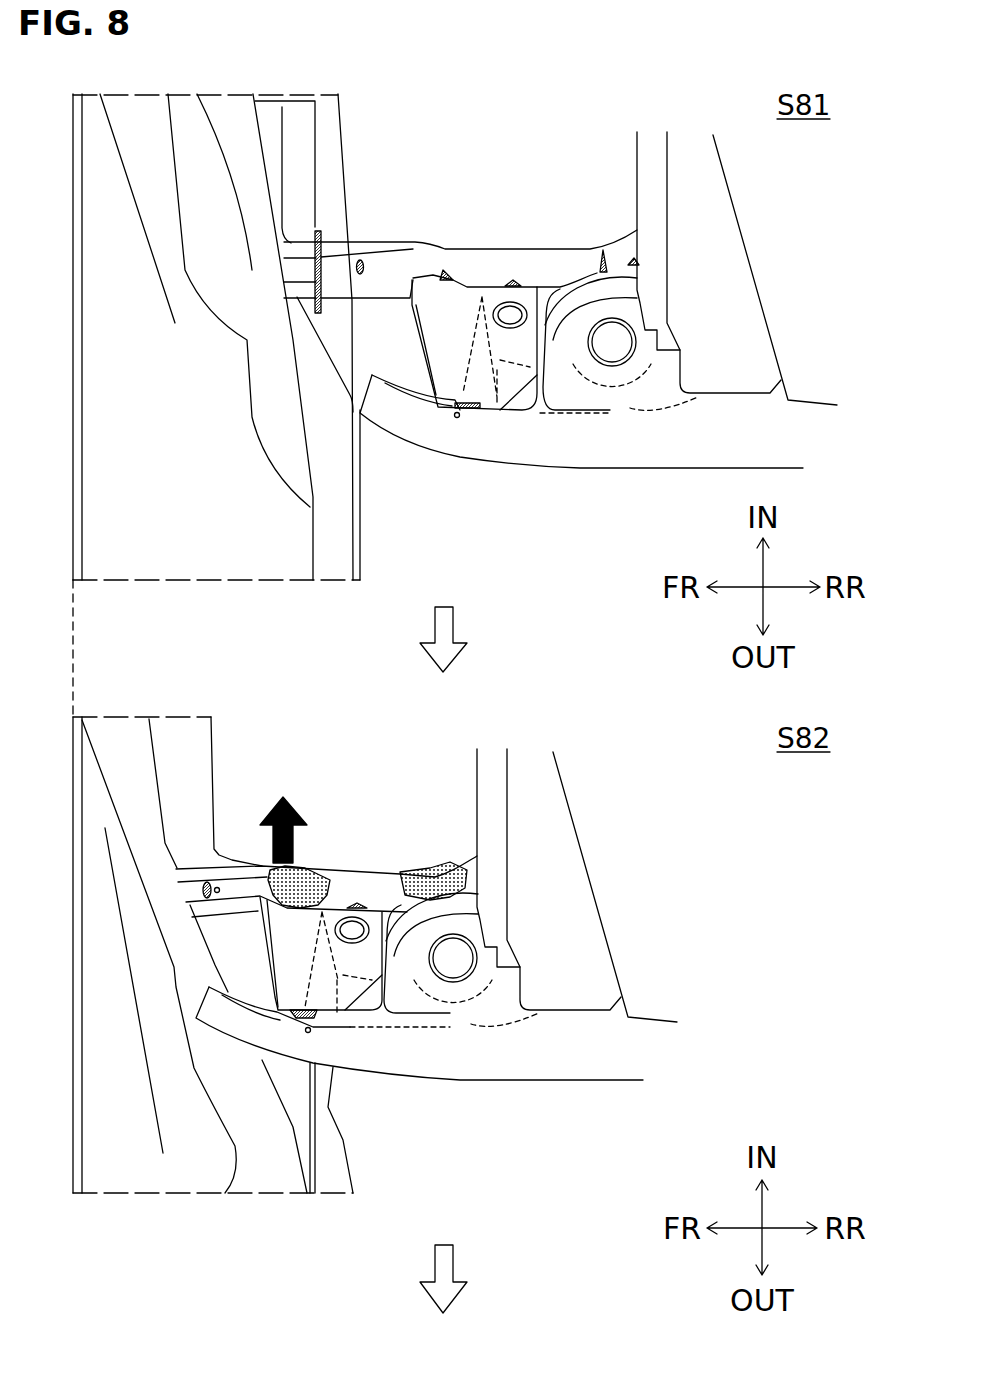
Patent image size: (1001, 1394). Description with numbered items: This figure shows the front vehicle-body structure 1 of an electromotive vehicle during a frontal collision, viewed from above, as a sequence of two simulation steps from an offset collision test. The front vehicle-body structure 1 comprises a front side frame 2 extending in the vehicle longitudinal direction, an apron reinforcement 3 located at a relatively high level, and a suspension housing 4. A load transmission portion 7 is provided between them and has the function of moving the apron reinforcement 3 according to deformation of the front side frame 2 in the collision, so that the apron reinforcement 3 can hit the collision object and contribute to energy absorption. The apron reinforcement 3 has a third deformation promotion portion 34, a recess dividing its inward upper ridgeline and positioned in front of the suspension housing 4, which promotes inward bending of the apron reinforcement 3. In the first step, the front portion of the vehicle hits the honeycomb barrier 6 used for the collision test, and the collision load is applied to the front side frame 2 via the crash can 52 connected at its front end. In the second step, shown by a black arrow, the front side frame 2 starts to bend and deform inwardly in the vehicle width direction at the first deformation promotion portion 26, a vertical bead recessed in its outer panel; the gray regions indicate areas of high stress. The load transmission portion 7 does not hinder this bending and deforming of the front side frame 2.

The front vehicle-body structure 1 is at (426, 149).
The front side frame 2 is at (527, 247).
The apron reinforcement 3 is at (538, 458).
The suspension housing 4 is at (592, 300).
The honeycomb barrier 6 is at (362, 547).
The load transmission portion 7 is at (473, 292).
The first deformation promotion portion 26 is at (287, 905).
The third deformation promotion portion 34 is at (457, 418).
The crash can 52 is at (290, 242).